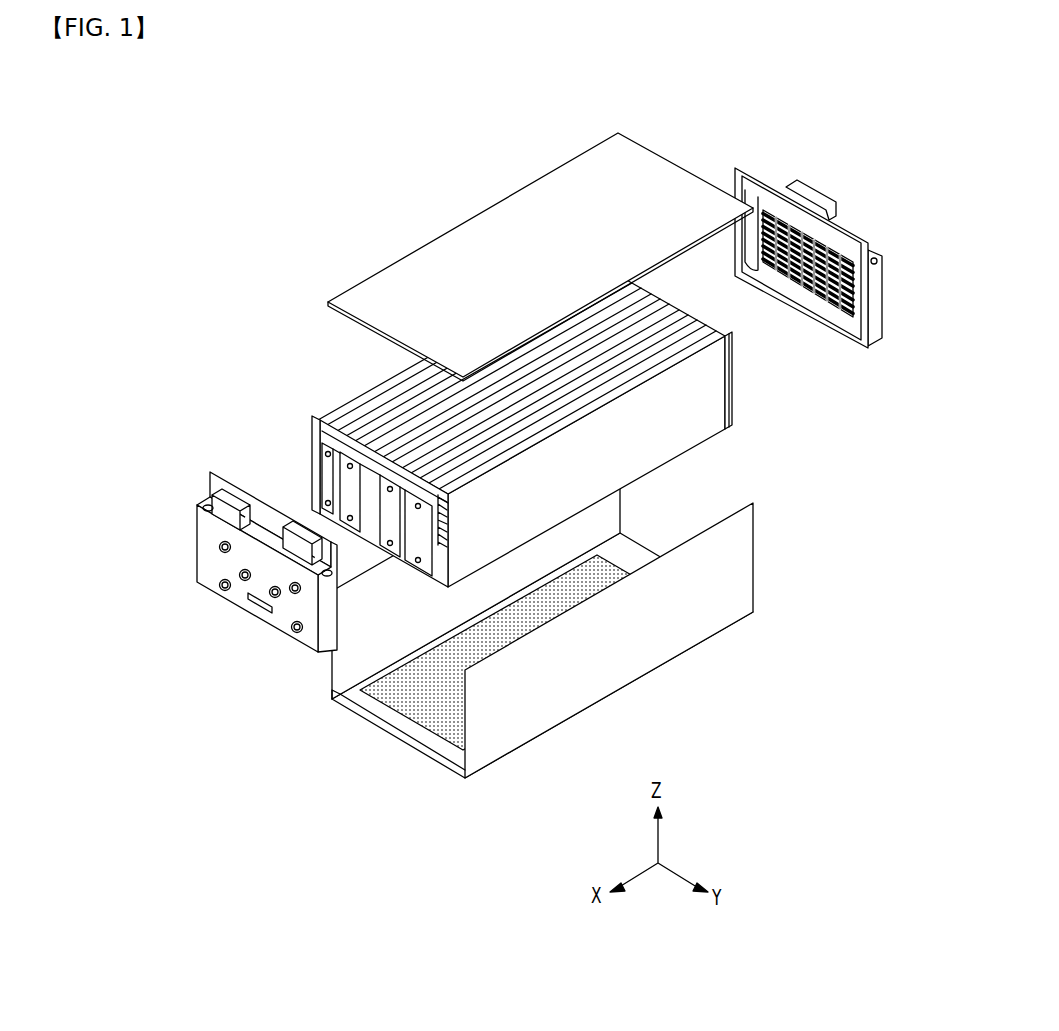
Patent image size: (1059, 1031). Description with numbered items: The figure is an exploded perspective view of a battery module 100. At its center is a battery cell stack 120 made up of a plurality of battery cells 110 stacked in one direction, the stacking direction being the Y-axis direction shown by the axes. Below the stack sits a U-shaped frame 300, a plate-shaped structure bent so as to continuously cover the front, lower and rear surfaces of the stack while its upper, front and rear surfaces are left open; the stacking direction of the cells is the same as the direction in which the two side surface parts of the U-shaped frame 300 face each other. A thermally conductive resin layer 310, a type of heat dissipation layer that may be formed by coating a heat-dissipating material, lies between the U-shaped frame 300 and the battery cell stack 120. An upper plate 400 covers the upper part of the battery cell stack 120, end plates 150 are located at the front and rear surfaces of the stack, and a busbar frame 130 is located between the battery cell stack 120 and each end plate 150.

The battery module 100 is at (287, 131).
The battery cell 110 is at (683, 420).
The battery cell stack 120 is at (388, 407).
The busbar frame 130 is at (307, 460).
The end plate 150 is at (242, 600).
The U-shaped frame 300 is at (532, 603).
The thermally conductive resin layer 310 is at (423, 702).
The upper plate 400 is at (485, 238).